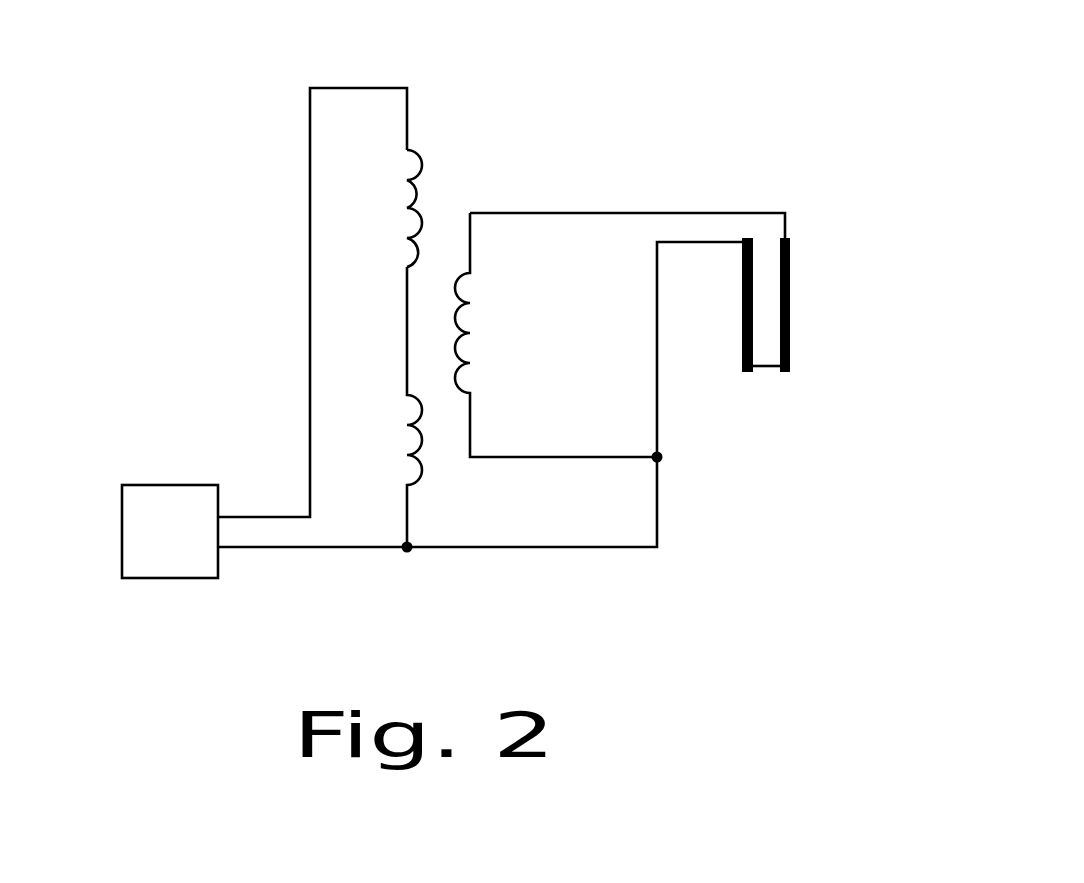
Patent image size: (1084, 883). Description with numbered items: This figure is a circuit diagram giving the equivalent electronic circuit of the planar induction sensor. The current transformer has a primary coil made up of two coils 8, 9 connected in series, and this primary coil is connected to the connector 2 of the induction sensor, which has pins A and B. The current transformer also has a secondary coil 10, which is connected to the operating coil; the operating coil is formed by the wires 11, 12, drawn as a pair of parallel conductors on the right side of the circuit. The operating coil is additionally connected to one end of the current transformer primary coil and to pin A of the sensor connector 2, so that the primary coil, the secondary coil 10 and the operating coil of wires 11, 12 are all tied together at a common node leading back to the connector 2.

The connector 2 is at (152, 490).
The series coil 8 is at (422, 442).
The series coil 9 is at (422, 168).
The secondary coil 10 is at (468, 272).
The wire 11 is at (753, 252).
The wire 12 is at (790, 275).